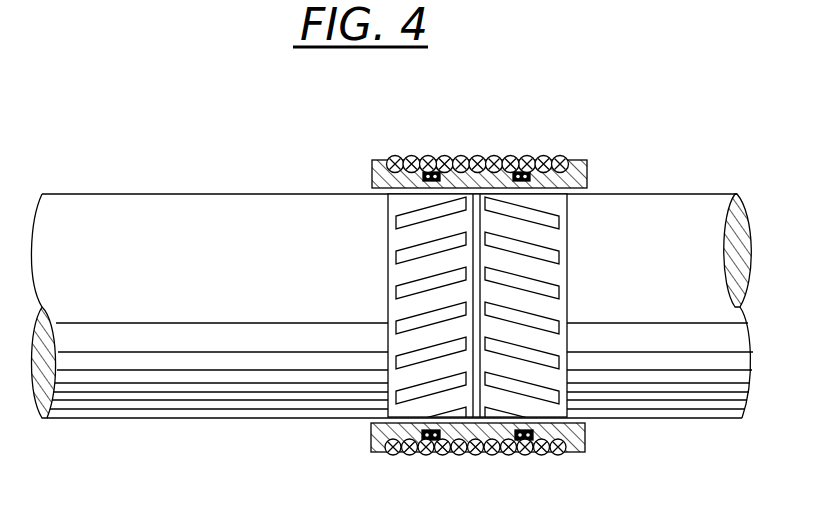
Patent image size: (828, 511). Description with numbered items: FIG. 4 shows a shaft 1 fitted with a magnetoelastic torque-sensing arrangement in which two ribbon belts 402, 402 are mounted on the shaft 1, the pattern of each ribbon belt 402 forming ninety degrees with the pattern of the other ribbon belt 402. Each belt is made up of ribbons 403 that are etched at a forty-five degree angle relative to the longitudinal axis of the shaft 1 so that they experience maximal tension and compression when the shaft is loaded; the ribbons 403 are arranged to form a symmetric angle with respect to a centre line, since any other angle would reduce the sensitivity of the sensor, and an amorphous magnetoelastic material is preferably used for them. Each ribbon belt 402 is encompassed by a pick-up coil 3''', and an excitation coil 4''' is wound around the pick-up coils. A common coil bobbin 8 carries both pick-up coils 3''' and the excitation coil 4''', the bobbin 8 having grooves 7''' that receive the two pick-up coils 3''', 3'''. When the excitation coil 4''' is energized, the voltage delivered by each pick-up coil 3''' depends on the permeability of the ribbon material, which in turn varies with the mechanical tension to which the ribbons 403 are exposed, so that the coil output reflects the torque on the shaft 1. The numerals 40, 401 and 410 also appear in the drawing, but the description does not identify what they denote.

The shaft 1 is at (722, 194).
The common coil bobbin 8 is at (455, 467).
The upper clamping device 40 is at (446, 123).
The tube wall portion 401 is at (380, 372).
The ribbon belt 402 is at (468, 271).
The ribbons 403 is at (388, 308).
The clamping bar 410 is at (364, 173).
The pick-up coil 3''' is at (492, 142).
The excitation coil 4''' is at (413, 138).
The grooves 7''' is at (475, 475).